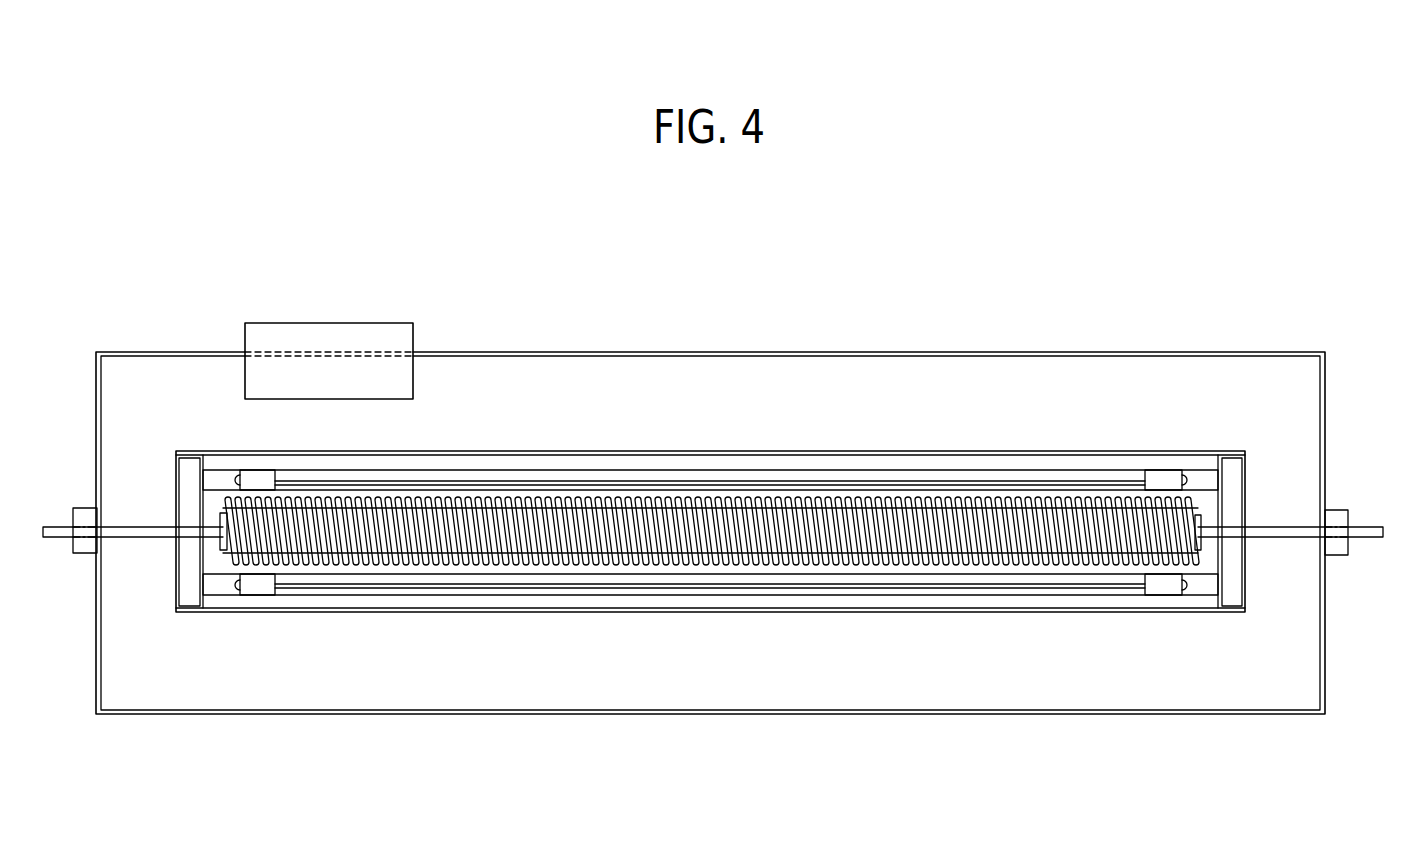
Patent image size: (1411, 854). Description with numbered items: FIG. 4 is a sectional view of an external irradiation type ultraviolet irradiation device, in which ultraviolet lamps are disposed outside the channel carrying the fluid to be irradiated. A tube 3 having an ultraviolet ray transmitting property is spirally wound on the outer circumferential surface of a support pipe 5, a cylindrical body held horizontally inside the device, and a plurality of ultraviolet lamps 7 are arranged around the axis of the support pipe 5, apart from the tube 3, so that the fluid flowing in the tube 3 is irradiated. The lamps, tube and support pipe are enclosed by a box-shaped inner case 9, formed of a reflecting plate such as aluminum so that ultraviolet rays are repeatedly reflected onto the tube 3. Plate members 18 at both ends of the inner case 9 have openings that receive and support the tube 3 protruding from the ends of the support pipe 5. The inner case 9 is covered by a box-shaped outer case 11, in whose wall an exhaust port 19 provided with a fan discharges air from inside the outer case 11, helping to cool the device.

The tube 3 is at (1280, 527).
The support pipe 5 is at (1103, 497).
The ultraviolet lamps 7 is at (834, 470).
The inner case 9 is at (1022, 453).
The outer case 11 is at (1325, 470).
The plate member 18 is at (1245, 472).
The exhaust port 19 is at (413, 335).